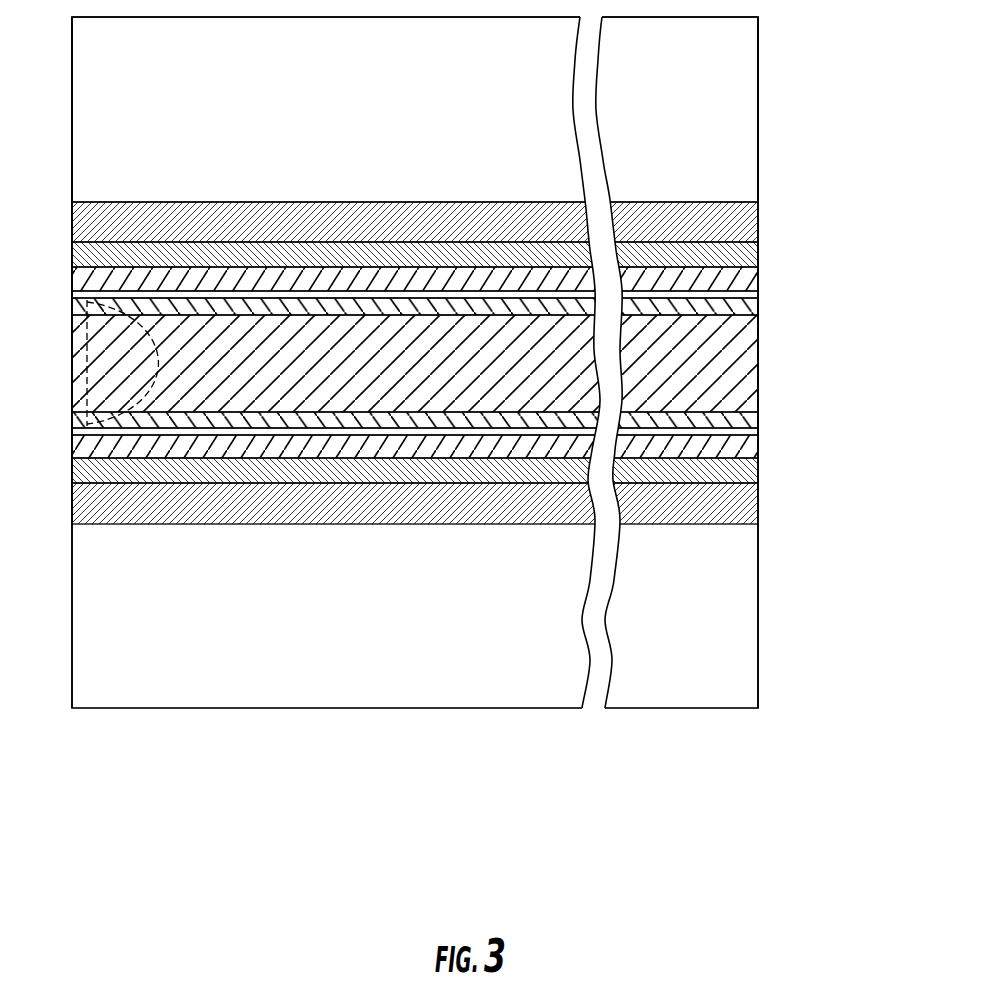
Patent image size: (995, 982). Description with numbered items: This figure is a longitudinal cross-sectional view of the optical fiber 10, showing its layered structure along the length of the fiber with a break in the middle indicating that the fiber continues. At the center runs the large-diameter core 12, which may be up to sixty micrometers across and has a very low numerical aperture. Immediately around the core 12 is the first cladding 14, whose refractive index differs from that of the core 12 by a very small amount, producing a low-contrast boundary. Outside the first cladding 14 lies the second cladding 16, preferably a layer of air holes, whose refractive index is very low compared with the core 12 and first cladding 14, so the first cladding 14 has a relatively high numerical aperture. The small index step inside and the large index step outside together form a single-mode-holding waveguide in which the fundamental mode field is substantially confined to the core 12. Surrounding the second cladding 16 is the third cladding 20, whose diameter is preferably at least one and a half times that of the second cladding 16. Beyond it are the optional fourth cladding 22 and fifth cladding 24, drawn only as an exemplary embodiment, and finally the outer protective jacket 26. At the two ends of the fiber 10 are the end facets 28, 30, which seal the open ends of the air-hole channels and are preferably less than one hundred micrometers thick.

The optical fiber 10 is at (350, 752).
The core 12 is at (743, 360).
The first cladding 14 is at (752, 305).
The second cladding 16 is at (752, 295).
The third cladding 20 is at (752, 273).
The fourth cladding 22 is at (752, 252).
The fifth cladding 24 is at (752, 217).
The outer protective jacket 26 is at (743, 130).
The end facet 28 is at (72, 690).
The end facet 30 is at (758, 677).